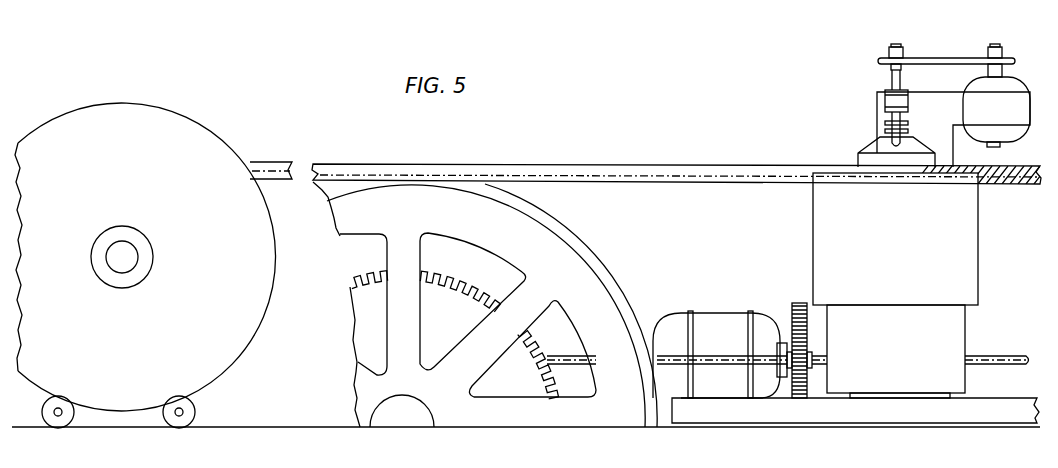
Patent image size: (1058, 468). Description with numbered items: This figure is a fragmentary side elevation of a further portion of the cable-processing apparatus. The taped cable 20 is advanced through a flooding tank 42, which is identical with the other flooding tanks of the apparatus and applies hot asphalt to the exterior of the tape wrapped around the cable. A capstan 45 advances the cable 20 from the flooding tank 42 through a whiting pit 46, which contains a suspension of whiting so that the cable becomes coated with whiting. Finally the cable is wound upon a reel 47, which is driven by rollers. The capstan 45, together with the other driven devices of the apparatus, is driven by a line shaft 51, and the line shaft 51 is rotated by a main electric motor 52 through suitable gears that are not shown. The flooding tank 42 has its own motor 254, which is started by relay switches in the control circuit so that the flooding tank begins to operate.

The taped cable 20 is at (632, 166).
The flooding tank 42 is at (857, 134).
The capstan 45 is at (562, 242).
The whiting pit 46 is at (300, 427).
The reel 47 is at (174, 115).
The line shaft 51 is at (1005, 356).
The main electric motor 52 is at (722, 318).
The motor 254 is at (1021, 78).